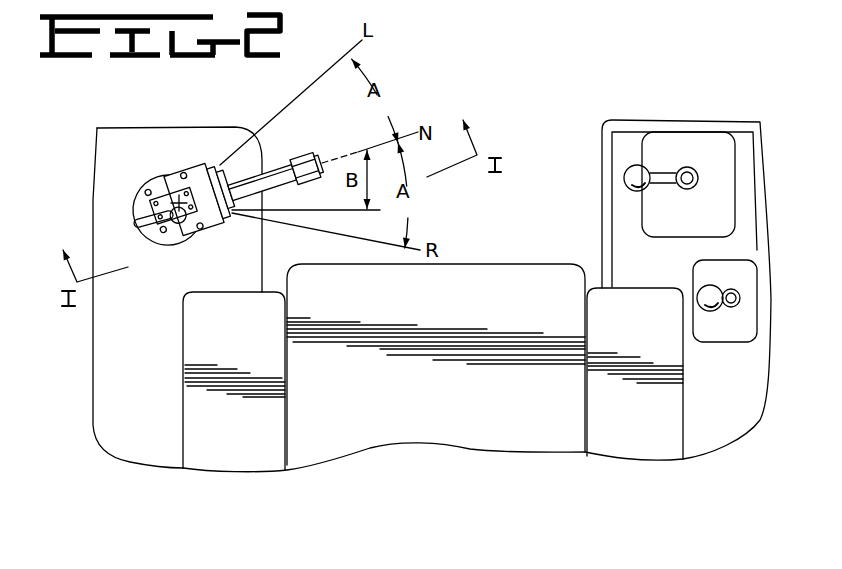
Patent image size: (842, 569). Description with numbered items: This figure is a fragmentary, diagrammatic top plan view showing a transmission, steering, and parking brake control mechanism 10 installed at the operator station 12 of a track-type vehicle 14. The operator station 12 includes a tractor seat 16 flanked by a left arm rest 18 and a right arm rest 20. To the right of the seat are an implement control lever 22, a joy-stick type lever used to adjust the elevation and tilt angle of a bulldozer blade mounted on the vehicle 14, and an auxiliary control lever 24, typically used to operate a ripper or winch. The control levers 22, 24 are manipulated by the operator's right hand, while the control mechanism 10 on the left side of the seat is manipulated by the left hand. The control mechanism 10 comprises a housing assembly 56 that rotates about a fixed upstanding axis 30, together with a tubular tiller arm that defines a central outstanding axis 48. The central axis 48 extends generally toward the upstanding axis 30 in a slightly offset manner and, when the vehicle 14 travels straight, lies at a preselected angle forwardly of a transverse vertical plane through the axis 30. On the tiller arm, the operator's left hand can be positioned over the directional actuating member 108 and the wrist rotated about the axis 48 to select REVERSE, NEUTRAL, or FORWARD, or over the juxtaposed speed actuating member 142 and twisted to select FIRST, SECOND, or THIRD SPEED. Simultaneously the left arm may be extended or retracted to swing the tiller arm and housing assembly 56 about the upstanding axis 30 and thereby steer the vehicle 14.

The transmission, steering, and parking brake control mechanism 10 is at (136, 186).
The operator station 12 is at (95, 376).
The track-type vehicle 14 is at (541, 460).
The tractor seat 16 is at (455, 407).
The left arm rest 18 is at (248, 439).
The right arm rest 20 is at (647, 424).
The implement control lever 22 is at (630, 178).
The auxiliary control lever 24 is at (704, 290).
The fixed upstanding axis 30 is at (178, 199).
The housing assembly 56 is at (188, 236).
The directional actuating member 108 is at (270, 166).
The speed actuating member 142 is at (302, 149).
The central outstanding axis 48 is at (405, 135).